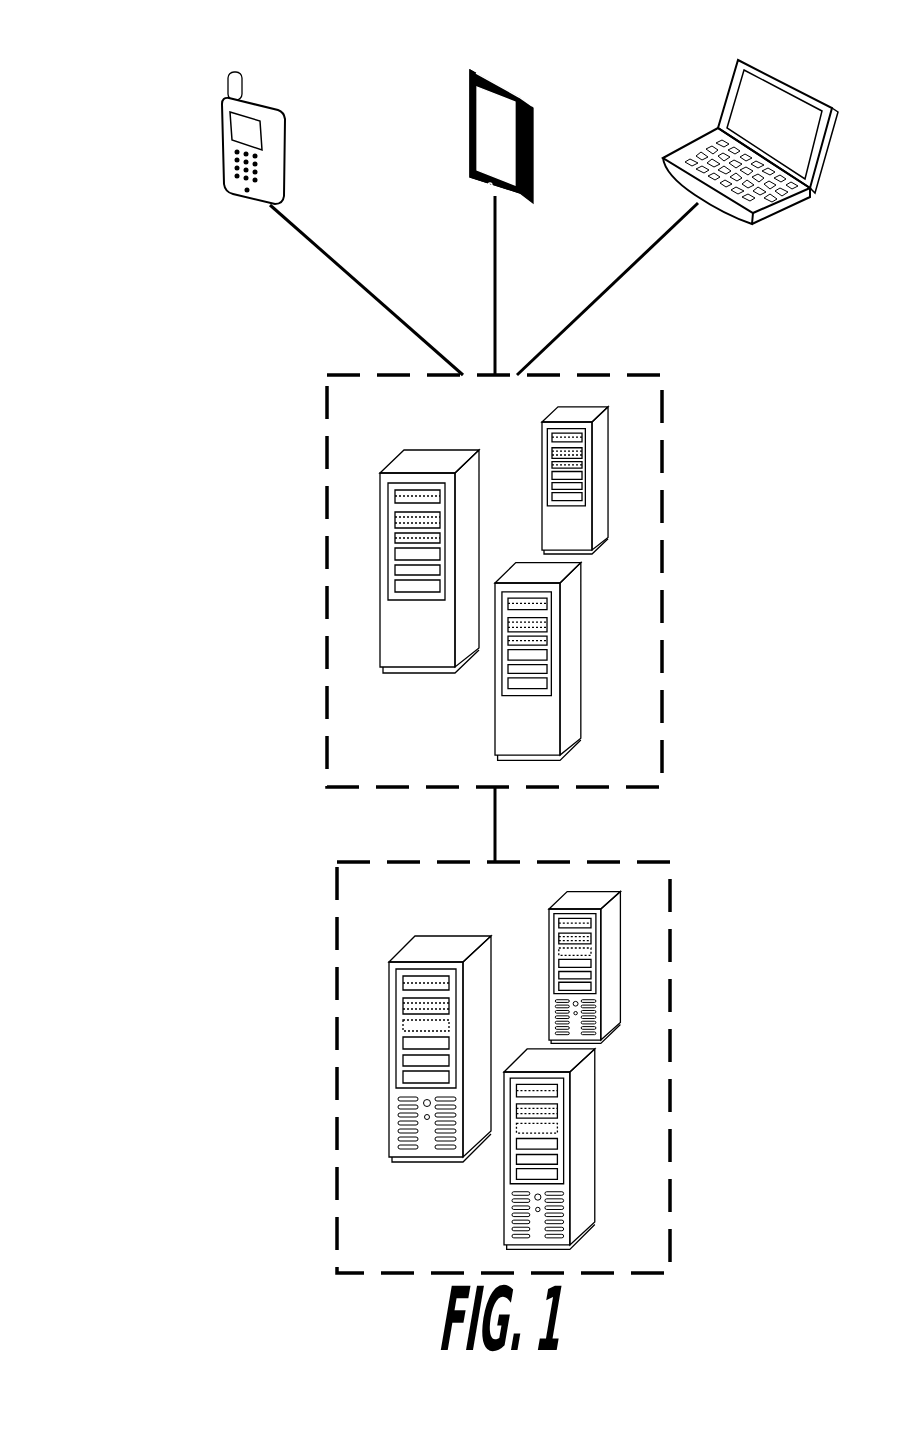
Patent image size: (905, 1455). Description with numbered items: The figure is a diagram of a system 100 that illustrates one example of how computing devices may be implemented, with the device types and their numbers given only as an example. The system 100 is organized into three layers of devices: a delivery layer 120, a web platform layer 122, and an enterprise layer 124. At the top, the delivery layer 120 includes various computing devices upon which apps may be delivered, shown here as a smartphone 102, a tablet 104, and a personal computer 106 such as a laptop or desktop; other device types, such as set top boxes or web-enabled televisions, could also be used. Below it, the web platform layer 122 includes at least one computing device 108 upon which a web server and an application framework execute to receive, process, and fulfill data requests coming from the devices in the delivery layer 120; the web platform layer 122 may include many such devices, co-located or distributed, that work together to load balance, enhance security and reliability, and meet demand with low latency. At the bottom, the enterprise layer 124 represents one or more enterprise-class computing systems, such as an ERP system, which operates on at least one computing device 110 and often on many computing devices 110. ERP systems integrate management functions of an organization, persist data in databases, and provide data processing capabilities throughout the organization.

The system 100 is at (592, 60).
The smartphone 102 is at (230, 190).
The tablet 104 is at (470, 132).
The personal computer 106 is at (728, 97).
The computing device 108 is at (663, 497).
The computing device 110 is at (672, 925).
The delivery layer 120 is at (172, 147).
The web platform layer 122 is at (260, 553).
The enterprise layer 124 is at (262, 1016).